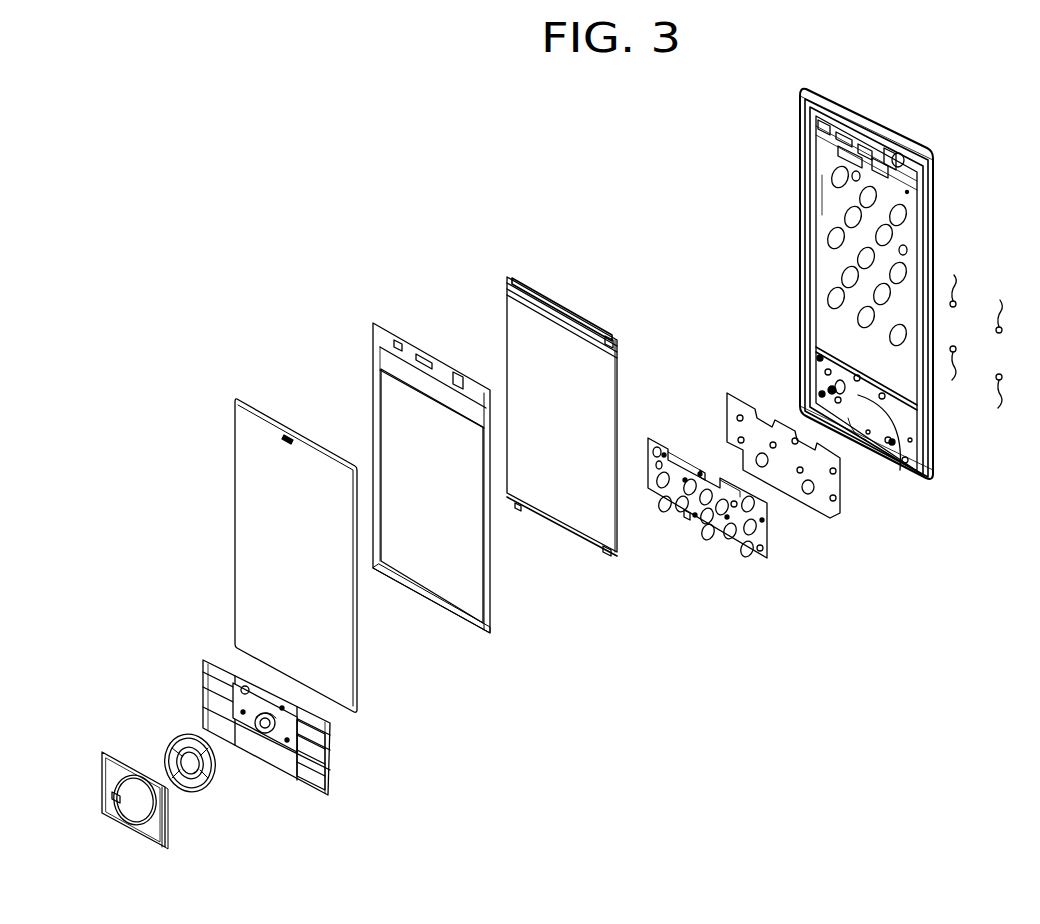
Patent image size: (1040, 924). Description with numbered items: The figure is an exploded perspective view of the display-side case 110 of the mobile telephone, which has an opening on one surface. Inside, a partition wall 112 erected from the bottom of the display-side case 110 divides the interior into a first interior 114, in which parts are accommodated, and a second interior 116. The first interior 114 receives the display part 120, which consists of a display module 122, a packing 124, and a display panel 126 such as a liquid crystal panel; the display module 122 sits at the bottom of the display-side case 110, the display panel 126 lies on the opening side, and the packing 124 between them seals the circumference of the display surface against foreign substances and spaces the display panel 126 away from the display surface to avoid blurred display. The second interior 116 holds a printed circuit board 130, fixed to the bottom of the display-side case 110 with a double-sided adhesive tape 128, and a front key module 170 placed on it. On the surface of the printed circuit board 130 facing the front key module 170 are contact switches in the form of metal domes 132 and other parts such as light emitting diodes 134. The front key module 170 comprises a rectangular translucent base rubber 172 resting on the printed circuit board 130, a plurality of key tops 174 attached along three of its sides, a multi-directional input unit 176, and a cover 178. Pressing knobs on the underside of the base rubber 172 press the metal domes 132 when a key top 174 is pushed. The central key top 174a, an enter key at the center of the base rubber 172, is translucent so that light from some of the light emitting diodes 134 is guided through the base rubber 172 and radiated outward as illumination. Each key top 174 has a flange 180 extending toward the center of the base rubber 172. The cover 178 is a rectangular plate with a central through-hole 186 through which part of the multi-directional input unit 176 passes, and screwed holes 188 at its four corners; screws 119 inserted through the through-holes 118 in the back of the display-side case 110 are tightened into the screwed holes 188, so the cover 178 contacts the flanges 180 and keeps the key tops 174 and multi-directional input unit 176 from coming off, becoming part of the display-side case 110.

The display-side case 110 is at (915, 130).
The partition wall 112 is at (835, 326).
The first interior 114 is at (840, 272).
The second interior 116 is at (868, 452).
The through-holes 118 is at (822, 396).
The screws 119 is at (979, 341).
The display part 120 is at (548, 224).
The display module 122 is at (553, 288).
The packing 124 is at (403, 345).
The display panel 126 is at (272, 413).
The double-sided adhesive tape 128 is at (814, 512).
The printed circuit board 130 is at (762, 572).
The metal domes 132 is at (674, 452).
The light emitting diodes 134 is at (737, 483).
The front key module 170 is at (382, 775).
The base rubber 172 is at (252, 750).
The key tops 174 is at (320, 737).
The central key top 174a is at (268, 735).
The multi-directional input unit 176 is at (214, 792).
The cover 178 is at (148, 833).
The flange 180 is at (204, 700).
The through-hole 186 is at (113, 793).
The screwed holes 188 is at (140, 766).